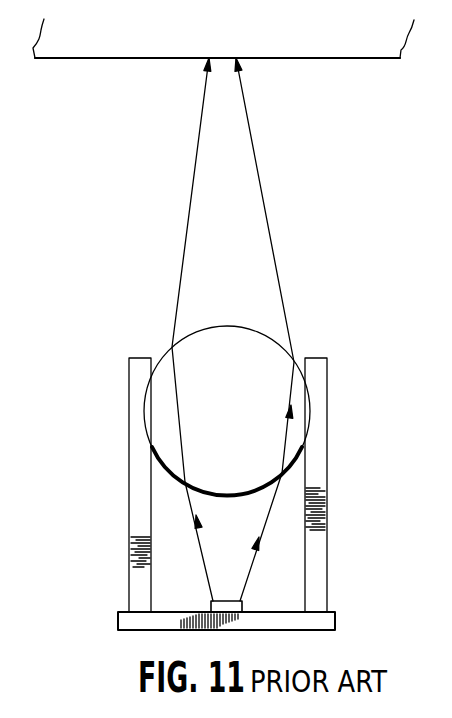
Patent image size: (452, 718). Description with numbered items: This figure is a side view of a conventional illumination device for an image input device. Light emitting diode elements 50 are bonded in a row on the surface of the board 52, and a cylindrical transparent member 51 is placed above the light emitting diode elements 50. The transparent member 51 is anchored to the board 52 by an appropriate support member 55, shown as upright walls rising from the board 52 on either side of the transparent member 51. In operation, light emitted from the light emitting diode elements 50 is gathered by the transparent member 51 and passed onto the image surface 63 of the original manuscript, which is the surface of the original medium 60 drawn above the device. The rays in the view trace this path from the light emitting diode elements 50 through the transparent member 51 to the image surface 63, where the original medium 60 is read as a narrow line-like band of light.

The light emitting diode element 50 is at (238, 605).
The cylindrical transparent member 51 is at (250, 362).
The board 52 is at (180, 619).
The support member 55 is at (140, 483).
The original medium 60 is at (150, 34).
The image surface 63 is at (332, 60).